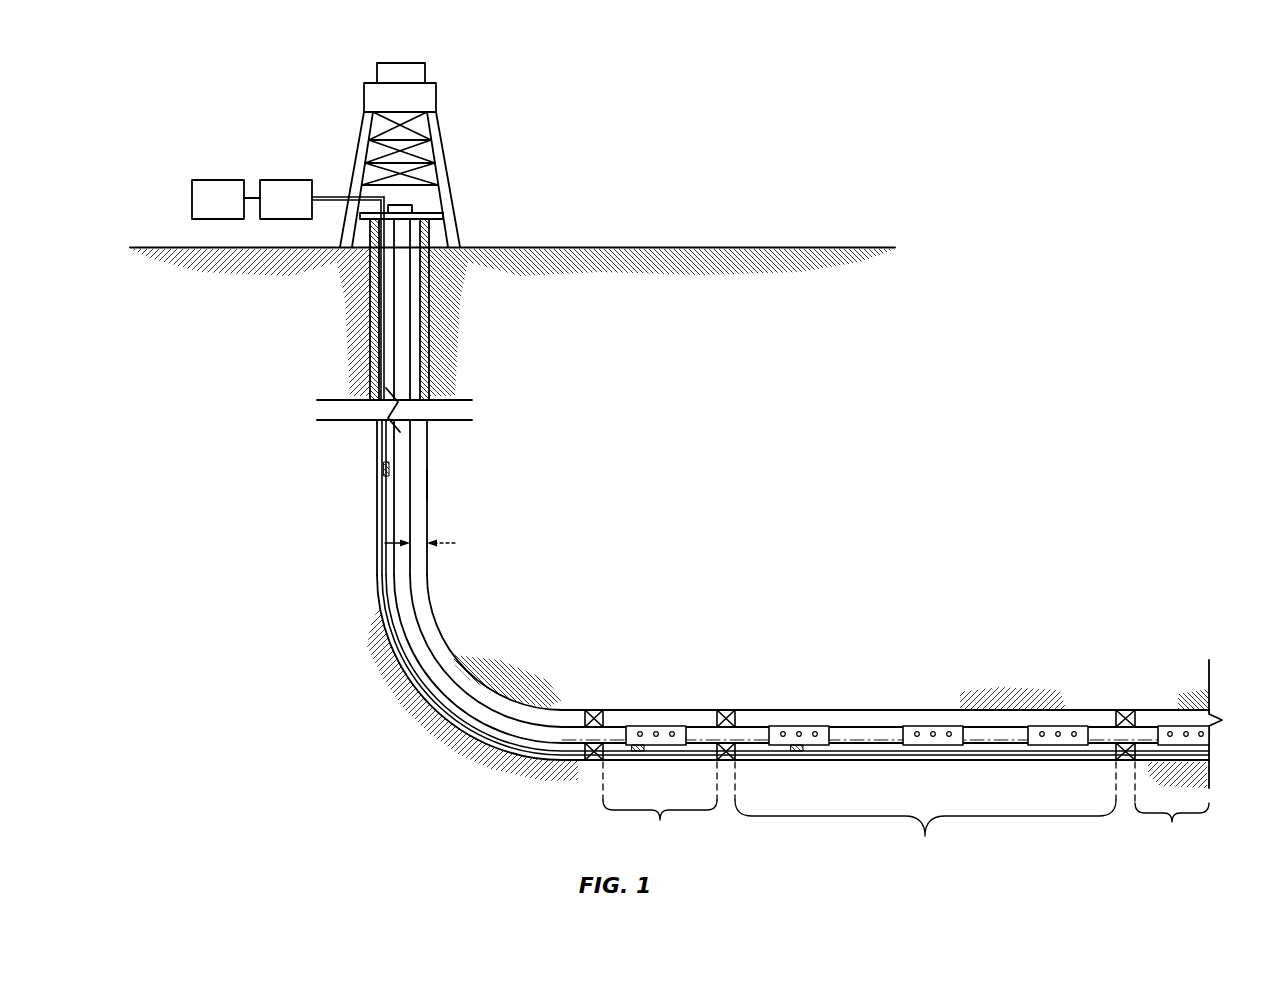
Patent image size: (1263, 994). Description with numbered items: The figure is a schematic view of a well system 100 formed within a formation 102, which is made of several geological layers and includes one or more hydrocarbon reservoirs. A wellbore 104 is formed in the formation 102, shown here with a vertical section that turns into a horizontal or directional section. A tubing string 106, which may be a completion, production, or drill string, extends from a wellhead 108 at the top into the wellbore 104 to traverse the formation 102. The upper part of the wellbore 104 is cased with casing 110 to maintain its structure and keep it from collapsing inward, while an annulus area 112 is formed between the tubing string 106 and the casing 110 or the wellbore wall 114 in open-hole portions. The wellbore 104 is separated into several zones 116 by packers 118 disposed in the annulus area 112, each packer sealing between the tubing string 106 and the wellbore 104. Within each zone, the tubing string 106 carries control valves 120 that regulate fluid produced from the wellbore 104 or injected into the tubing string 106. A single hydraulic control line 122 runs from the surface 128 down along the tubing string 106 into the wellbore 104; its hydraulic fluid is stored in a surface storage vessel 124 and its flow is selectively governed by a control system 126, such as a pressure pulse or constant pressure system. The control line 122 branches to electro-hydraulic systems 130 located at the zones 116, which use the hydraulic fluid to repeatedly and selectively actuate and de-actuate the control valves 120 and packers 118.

The well system 100 is at (1060, 180).
The formation 102 is at (223, 487).
The wellbore 104 is at (420, 448).
The tubing string 106 is at (412, 500).
The wellhead 108 is at (413, 210).
The casing 110 is at (424, 291).
The annulus area 112 is at (418, 545).
The wellbore wall 114 is at (428, 490).
The zones 116 is at (906, 820).
The packers 118 is at (596, 710).
The control valves 120 is at (660, 726).
The single hydraulic control line 122 is at (338, 197).
The surface storage vessel 124 is at (201, 211).
The control system 126 is at (269, 211).
The surface 128 is at (588, 247).
The electro-hydraulic systems 130 is at (386, 469).